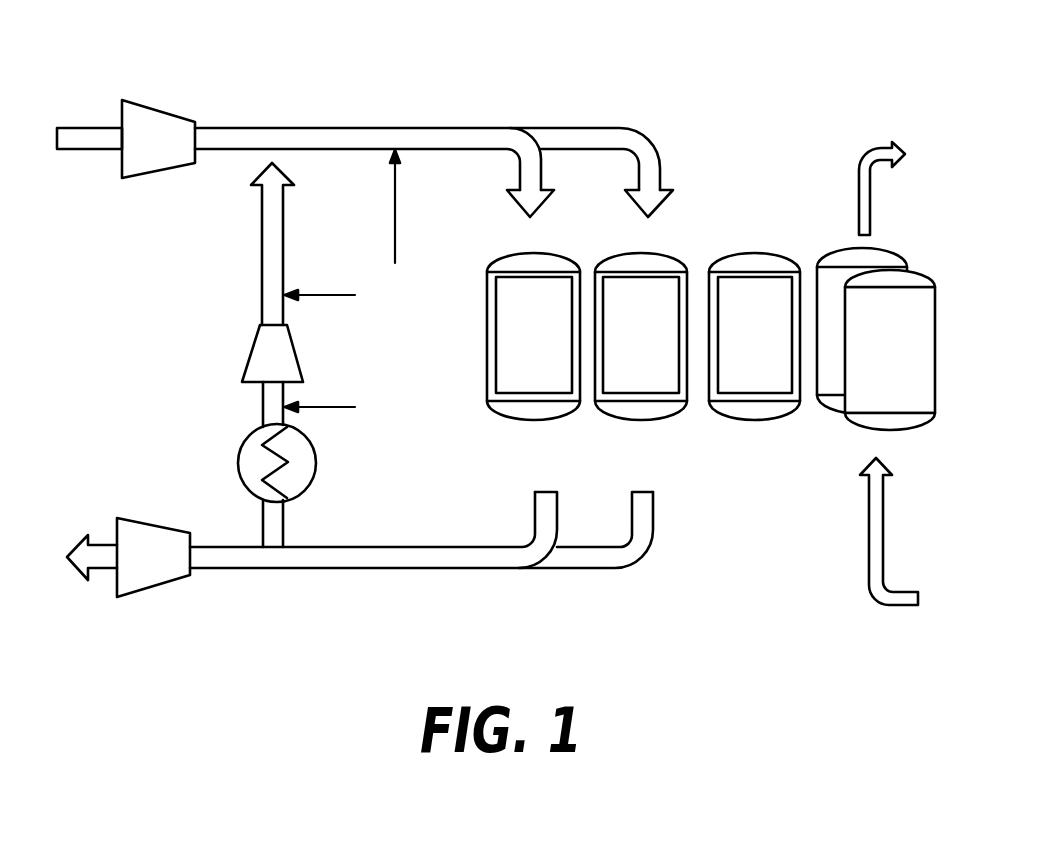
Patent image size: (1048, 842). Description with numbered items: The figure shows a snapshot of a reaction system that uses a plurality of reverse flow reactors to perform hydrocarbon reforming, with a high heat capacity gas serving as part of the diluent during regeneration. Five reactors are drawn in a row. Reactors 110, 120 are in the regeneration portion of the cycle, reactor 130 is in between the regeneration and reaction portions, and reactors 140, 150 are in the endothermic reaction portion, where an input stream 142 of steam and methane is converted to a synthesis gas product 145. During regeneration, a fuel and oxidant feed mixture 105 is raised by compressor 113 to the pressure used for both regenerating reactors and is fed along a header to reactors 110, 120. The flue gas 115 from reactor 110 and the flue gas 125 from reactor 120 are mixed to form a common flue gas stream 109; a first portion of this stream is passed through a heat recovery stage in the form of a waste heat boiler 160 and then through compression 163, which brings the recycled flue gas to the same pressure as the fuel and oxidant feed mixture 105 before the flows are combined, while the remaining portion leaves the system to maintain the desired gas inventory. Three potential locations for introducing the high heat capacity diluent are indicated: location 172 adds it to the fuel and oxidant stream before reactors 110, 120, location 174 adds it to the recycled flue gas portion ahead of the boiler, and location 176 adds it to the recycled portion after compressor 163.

The fuel and oxidant feed mixture 105 is at (70, 127).
The compressor 113 is at (160, 113).
The location for adding high heat capacity diluent gas 172 is at (395, 225).
The location for adding high heat capacity diluent gas 176 is at (325, 297).
The location for adding high heat capacity diluent gas 174 is at (333, 408).
The compression 163 is at (250, 348).
The waste heat boiler 160 is at (240, 463).
The common flue gas stream 109 is at (412, 568).
The flue gas 115 is at (535, 510).
The flue gas 125 is at (653, 523).
The reactor 110 is at (552, 353).
The reactor 120 is at (662, 353).
The reactor 130 is at (776, 353).
The reactor 140 is at (883, 253).
The reactor 150 is at (932, 372).
The synthesis gas product 145 is at (877, 152).
The input stream 142 is at (875, 602).